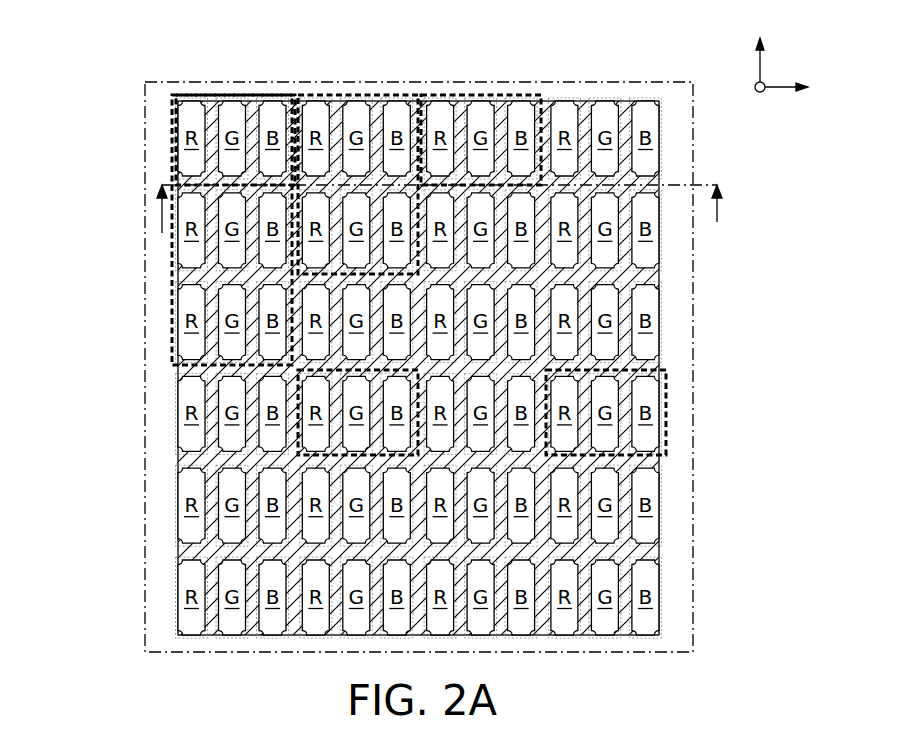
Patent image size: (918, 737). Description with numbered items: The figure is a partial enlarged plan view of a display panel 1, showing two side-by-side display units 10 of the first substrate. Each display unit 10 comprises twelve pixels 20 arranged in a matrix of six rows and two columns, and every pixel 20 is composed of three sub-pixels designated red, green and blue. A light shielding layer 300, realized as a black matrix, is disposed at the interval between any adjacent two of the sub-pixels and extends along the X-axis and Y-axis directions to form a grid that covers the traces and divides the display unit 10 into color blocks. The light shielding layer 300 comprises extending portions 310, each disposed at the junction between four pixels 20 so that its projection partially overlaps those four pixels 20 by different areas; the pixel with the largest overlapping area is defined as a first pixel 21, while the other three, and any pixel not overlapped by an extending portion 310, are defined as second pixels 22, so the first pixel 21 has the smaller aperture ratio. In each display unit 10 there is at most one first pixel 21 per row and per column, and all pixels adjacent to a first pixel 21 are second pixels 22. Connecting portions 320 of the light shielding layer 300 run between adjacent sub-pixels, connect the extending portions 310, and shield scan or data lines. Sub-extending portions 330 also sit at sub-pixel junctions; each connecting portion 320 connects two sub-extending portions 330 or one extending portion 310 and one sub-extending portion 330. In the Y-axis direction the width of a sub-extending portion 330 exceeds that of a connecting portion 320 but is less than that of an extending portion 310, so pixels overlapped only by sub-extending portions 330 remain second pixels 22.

The display panel 1 is at (26, 36).
The display unit 10 is at (145, 368).
The pixel 20 is at (362, 142).
The first pixel 21 is at (483, 94).
The second pixel 22 is at (377, 94).
The light shielding layer 300 is at (249, 96).
The extending portion 310 is at (290, 117).
The connecting portion 320 is at (268, 173).
The sub-extending portion 330 is at (222, 172).